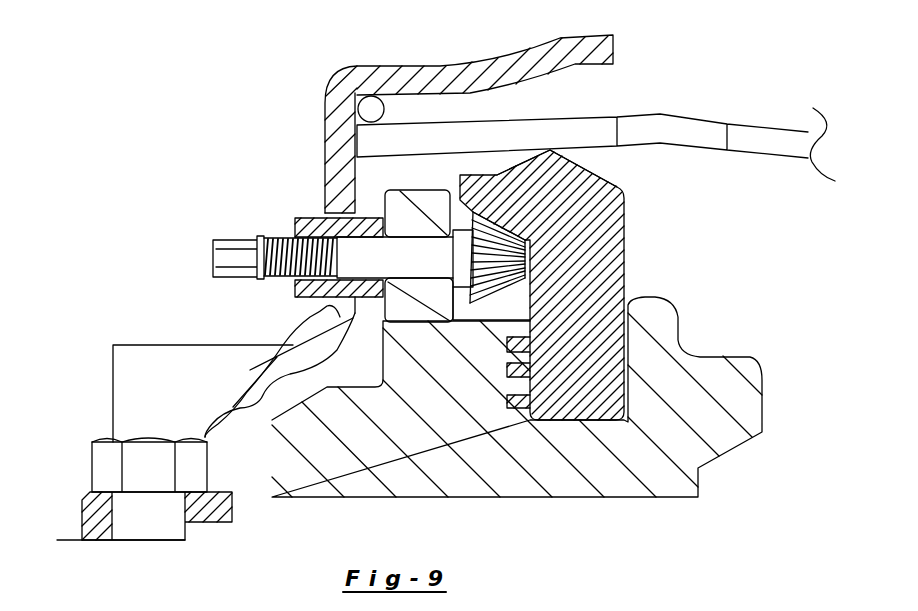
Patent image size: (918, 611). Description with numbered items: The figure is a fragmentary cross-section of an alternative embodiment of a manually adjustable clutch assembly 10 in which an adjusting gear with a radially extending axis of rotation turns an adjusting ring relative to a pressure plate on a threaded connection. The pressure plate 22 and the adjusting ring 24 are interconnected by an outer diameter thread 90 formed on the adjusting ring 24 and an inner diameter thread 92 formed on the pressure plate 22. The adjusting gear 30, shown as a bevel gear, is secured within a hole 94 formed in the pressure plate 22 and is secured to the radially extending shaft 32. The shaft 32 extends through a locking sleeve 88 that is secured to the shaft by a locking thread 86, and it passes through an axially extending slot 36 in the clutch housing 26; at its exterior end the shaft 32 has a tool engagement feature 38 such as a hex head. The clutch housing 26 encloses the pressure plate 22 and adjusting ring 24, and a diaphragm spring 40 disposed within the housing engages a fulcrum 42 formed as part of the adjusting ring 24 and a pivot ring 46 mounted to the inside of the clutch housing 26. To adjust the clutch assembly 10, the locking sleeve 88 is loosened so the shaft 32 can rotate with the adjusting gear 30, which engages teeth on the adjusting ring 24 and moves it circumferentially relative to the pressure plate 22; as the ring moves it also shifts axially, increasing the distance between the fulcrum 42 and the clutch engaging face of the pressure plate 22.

The clutch assembly 10 is at (226, 146).
The pressure plate 22 is at (752, 401).
The adjusting ring 24 is at (590, 254).
The clutch housing 26 is at (470, 62).
The adjusting gear 30 is at (530, 256).
The shaft 32 is at (363, 270).
The axially extending slot 36 is at (337, 308).
The tool engagement feature 38 is at (222, 257).
The diaphragm spring 40 is at (753, 125).
The fulcrum 42 is at (546, 148).
The pivot ring 46 is at (362, 110).
The locking thread 86 is at (283, 237).
The locking sleeve 88 is at (305, 217).
The outer diameter thread 90 is at (518, 358).
The inner diameter thread 92 is at (512, 398).
The hole 94 is at (402, 285).